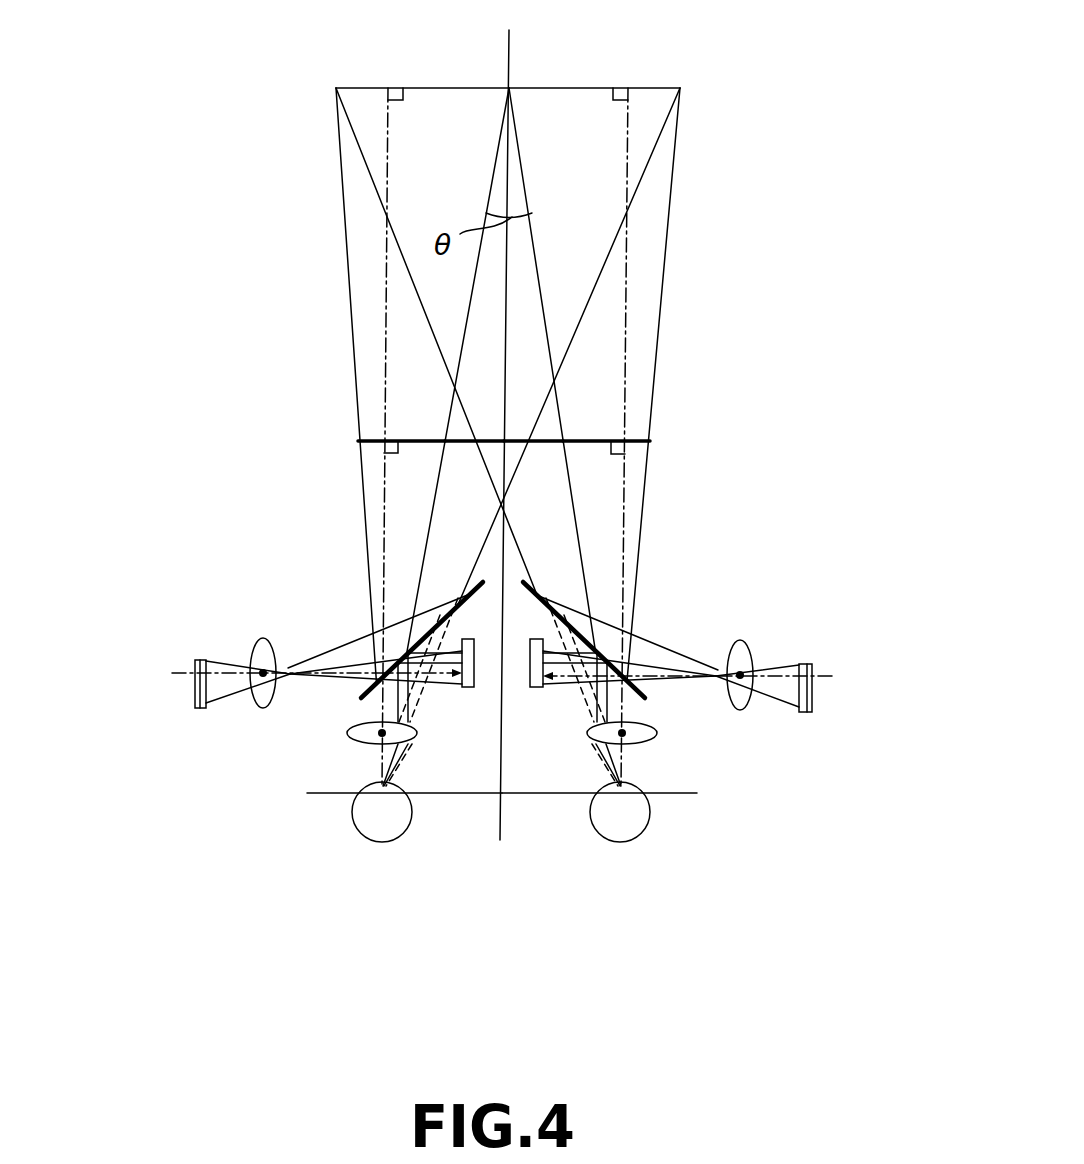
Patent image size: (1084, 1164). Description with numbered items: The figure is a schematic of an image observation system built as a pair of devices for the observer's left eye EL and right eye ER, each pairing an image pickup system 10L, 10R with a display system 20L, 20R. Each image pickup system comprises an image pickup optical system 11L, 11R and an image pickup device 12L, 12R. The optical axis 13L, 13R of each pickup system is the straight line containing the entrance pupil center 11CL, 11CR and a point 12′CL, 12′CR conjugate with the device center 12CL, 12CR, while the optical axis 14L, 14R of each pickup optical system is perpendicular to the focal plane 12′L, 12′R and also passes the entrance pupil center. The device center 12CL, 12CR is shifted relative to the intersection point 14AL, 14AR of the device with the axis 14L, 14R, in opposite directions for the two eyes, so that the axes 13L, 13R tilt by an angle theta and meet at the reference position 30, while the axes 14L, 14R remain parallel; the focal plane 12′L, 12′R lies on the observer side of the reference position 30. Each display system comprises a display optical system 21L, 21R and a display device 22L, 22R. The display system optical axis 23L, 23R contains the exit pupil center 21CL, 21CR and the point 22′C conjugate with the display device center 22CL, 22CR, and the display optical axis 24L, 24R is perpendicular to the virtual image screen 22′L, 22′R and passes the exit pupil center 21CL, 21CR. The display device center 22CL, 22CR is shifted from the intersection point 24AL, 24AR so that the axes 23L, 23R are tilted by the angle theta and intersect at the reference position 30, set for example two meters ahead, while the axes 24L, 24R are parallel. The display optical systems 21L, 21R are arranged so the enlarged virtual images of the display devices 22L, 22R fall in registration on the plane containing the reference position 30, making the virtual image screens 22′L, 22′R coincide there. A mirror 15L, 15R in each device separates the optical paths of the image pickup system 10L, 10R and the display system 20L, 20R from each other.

The point conjugate with display device center 22′C is at (509, 88).
The virtual image screen of right-eye display system 22′R is at (733, 57).
The virtual image screen of left-eye display system 22′L is at (563, 55).
The reference position 30 is at (507, 90).
The optical axis of left-eye image pickup optical system 14L is at (387, 253).
The optical axis of right-eye image pickup optical system 14R is at (628, 255).
The optical axis of left-eye image pickup system 13L is at (423, 495).
The optical axis of right-eye image pickup system 13R is at (577, 498).
The point conjugate with left image pickup device center 12′CL is at (443, 437).
The point conjugate with right image pickup device center 12′CR is at (565, 437).
The focal plane of left image pickup system 12′L is at (423, 438).
The focal plane of right image pickup system 12′R is at (597, 439).
The left-eye image pickup system 10L is at (183, 583).
The right-eye image pickup system 10R is at (812, 583).
The left image pickup device 12L is at (195, 707).
The right image pickup device 12R is at (813, 712).
The intersection point of left image pickup device and pickup optical axis 14AL is at (195, 663).
The intersection point of right image pickup device and pickup optical axis 14AR is at (810, 665).
The center of left image pickup device 12CL is at (196, 680).
The center of right image pickup device 12CR is at (812, 683).
The left image pickup optical system 11L is at (276, 646).
The right image pickup optical system 11R is at (730, 648).
The entrance pupil center of left image pickup optical system 11CL is at (263, 672).
The entrance pupil center of right image pickup optical system 11CR is at (740, 675).
The left mirror 15L is at (361, 698).
The right mirror 15R is at (643, 698).
The optical axis of left display optical system 24L is at (384, 700).
The optical axis of right display optical system 24R is at (620, 700).
The intersection point of left display device and display optical axis 24AL is at (462, 687).
The intersection point of right display device and display optical axis 24AR is at (543, 687).
The left display device 22L is at (473, 687).
The right display device 22R is at (531, 687).
The center of left display device 22CL is at (474, 667).
The center of right display device 22CR is at (530, 667).
The left display optical system 21L is at (349, 739).
The right display optical system 21R is at (652, 741).
The exit pupil center of left display optical system 21CL is at (382, 733).
The exit pupil center of right display optical system 21CR is at (622, 733).
The optical axis of left-eye display system 23L is at (307, 793).
The optical axis of right-eye display system 23R is at (697, 793).
The left observing eye EL is at (353, 815).
The right observing eye ER is at (652, 815).
The left-eye display system 20L is at (268, 884).
The right-eye display system 20R is at (724, 886).